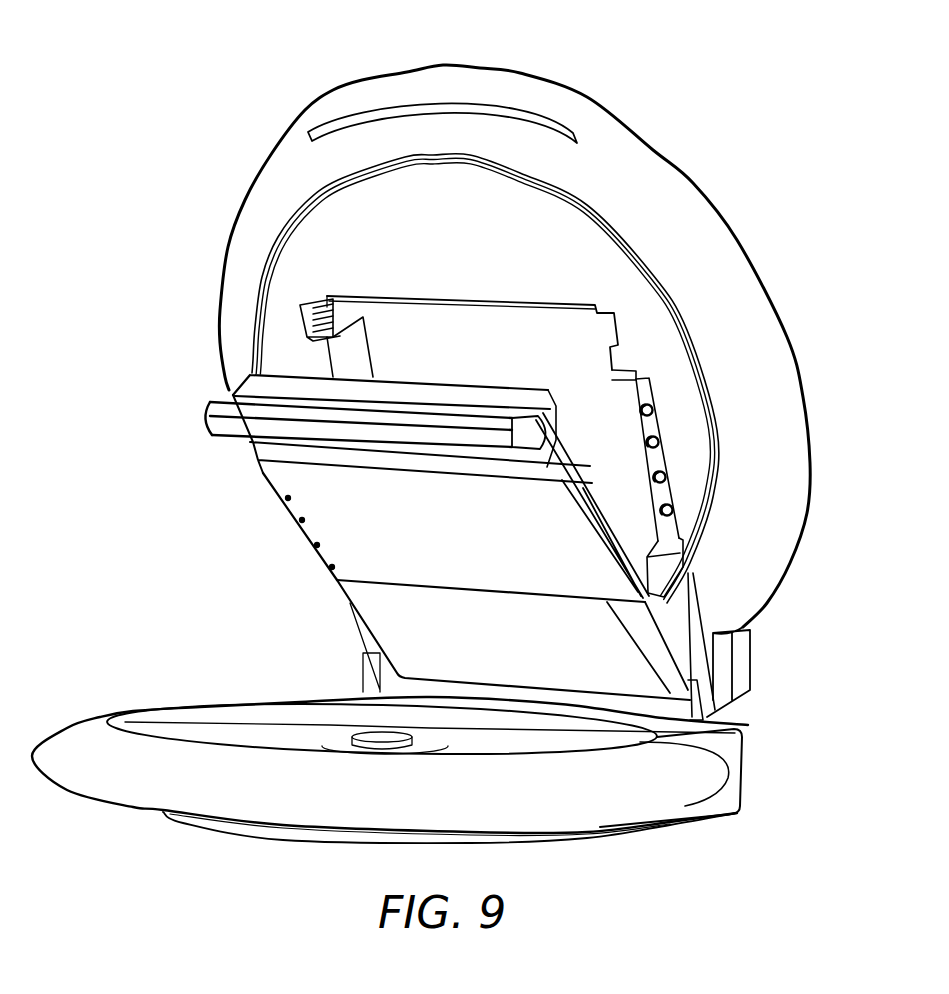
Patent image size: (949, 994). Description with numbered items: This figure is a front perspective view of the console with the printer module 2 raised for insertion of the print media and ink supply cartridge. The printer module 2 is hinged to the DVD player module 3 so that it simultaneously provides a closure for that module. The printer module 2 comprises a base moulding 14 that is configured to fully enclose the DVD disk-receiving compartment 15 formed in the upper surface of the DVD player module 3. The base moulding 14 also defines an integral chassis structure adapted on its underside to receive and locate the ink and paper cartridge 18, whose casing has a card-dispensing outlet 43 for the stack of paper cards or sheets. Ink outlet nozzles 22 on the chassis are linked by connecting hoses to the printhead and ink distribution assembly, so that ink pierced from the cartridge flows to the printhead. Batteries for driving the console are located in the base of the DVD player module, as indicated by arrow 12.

The printer module 2 is at (675, 205).
The card-dispensing outlet 43 is at (483, 100).
The base moulding 14 is at (320, 233).
The ink outlet nozzles 22 is at (653, 405).
The ink and paper cartridge 18 is at (320, 528).
The DVD disk-receiving compartment 15 is at (233, 735).
The DVD player module 3 is at (683, 770).
The batteries location 12 is at (588, 836).